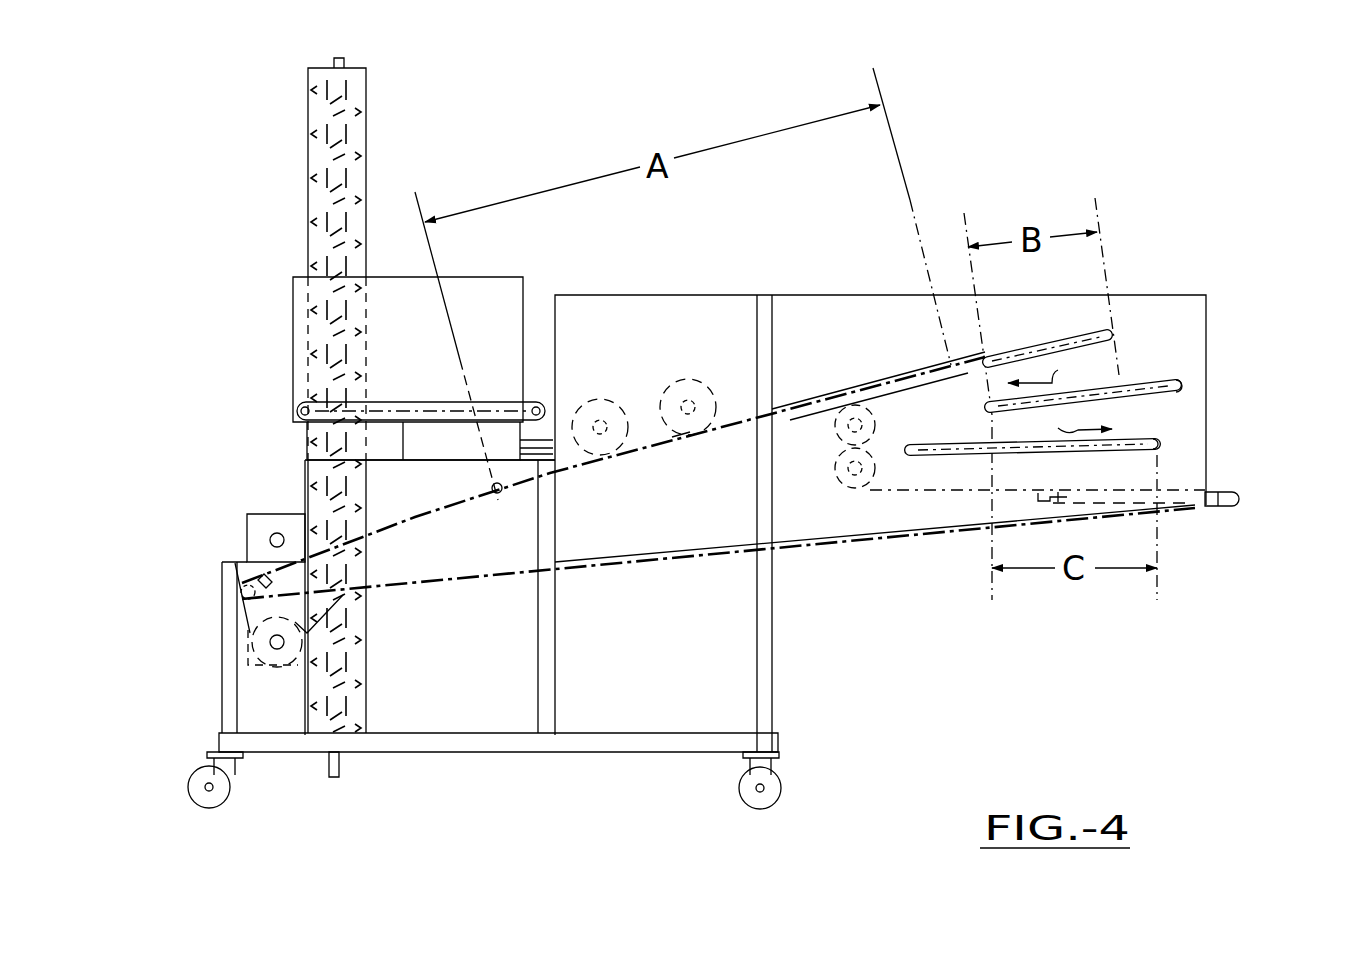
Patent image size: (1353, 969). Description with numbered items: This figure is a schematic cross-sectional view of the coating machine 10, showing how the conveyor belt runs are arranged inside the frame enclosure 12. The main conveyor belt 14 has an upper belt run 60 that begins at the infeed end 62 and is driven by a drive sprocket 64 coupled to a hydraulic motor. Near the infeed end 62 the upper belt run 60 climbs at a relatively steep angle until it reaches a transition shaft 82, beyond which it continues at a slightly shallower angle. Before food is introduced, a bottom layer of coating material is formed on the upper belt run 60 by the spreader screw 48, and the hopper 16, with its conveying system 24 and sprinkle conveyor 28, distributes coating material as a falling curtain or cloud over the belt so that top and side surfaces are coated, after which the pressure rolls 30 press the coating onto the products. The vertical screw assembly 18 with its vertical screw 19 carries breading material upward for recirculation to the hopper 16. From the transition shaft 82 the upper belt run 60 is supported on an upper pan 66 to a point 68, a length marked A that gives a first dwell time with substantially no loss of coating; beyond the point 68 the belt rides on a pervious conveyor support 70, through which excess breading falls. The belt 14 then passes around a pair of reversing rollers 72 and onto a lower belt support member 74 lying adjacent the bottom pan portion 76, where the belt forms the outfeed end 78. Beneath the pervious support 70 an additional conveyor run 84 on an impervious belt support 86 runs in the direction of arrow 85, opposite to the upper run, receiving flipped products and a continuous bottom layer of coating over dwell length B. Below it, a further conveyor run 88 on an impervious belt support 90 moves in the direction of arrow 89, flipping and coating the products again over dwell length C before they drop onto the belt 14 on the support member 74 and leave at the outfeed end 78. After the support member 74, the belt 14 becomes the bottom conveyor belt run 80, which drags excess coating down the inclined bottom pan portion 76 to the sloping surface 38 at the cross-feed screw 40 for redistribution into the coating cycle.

The coating machine 10 is at (848, 637).
The frame enclosure 12 is at (640, 295).
The main product conveyor belt 14 is at (432, 505).
The hopper 16 is at (470, 277).
The vertical screw assembly 18 is at (308, 212).
The vertical screw 19 is at (300, 350).
The conveying system 24 is at (440, 400).
The sprinkle conveyor 28 is at (515, 445).
The pressure rolls 30 is at (688, 380).
The sloping surface 38 is at (333, 610).
The cross-feed screw 40 is at (238, 652).
The spreader screw 48 is at (262, 518).
The upper belt run 60 is at (857, 390).
The infeed end 62 is at (215, 548).
The drive sprocket 64 is at (238, 592).
The upper pan 66 is at (680, 440).
The point 68 is at (970, 382).
The pervious conveyor support 70 is at (1022, 348).
The reversing rollers 72 is at (838, 462).
The lower belt support member 74 is at (1185, 508).
The bottom pan portion 76 is at (852, 553).
The outfeed end 78 is at (1240, 490).
The bottom conveyor belt run 80 is at (700, 560).
The transition shaft 82 is at (495, 492).
The additional conveyor run 84 is at (1165, 372).
The arrow 85 is at (1055, 368).
The impervious belt support 86 is at (1143, 393).
The conveyor run 88 is at (1150, 437).
The arrow 89 is at (1068, 428).
The impervious belt support 90 is at (1127, 450).